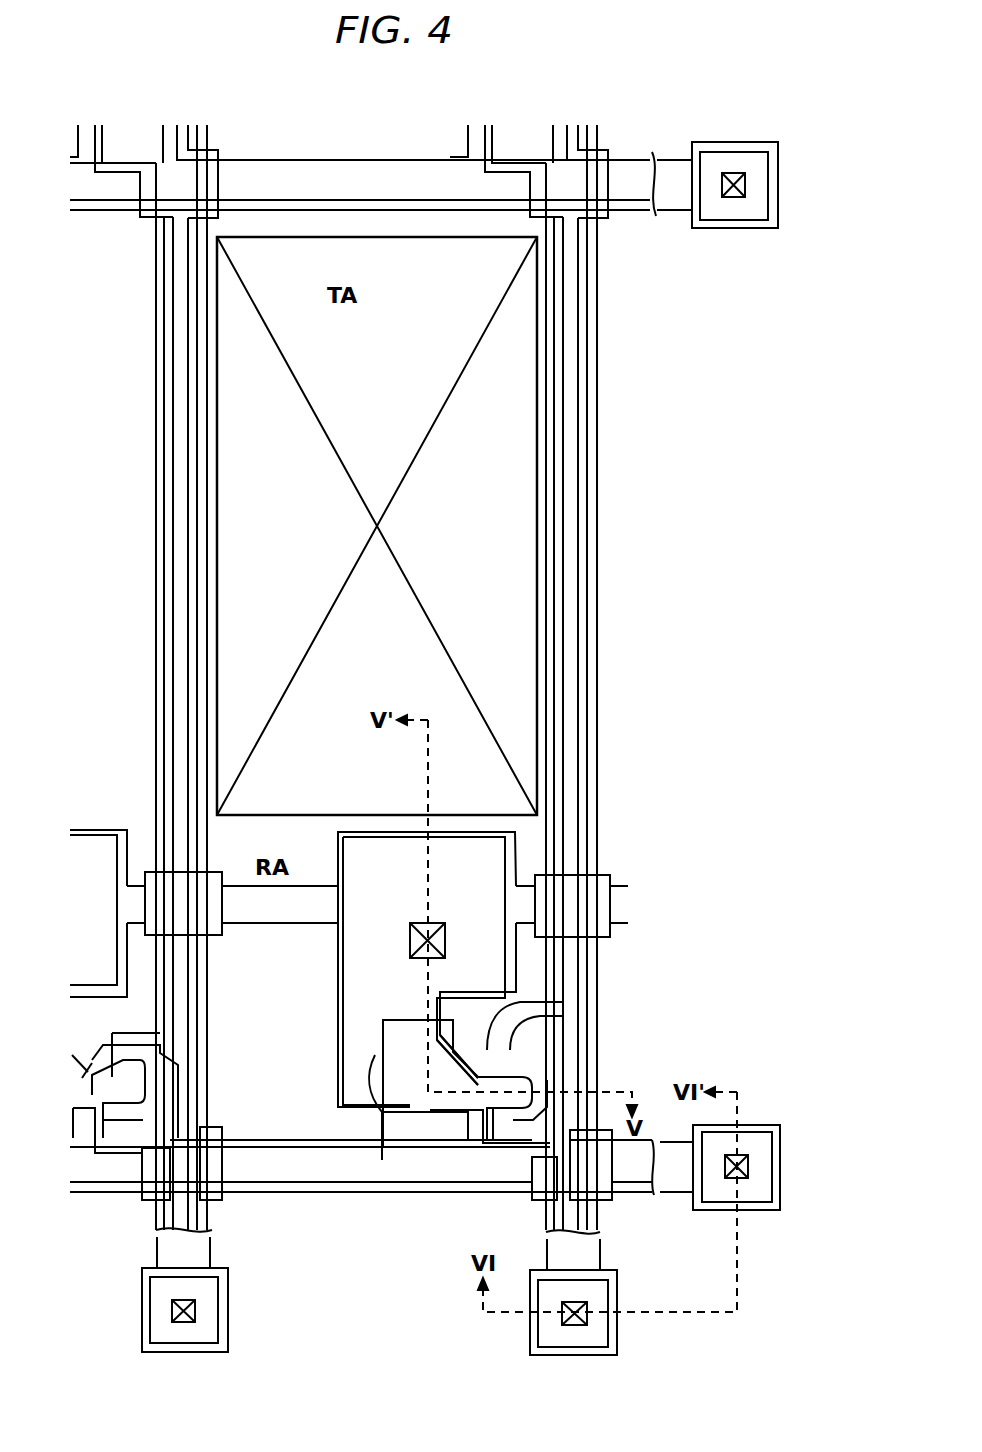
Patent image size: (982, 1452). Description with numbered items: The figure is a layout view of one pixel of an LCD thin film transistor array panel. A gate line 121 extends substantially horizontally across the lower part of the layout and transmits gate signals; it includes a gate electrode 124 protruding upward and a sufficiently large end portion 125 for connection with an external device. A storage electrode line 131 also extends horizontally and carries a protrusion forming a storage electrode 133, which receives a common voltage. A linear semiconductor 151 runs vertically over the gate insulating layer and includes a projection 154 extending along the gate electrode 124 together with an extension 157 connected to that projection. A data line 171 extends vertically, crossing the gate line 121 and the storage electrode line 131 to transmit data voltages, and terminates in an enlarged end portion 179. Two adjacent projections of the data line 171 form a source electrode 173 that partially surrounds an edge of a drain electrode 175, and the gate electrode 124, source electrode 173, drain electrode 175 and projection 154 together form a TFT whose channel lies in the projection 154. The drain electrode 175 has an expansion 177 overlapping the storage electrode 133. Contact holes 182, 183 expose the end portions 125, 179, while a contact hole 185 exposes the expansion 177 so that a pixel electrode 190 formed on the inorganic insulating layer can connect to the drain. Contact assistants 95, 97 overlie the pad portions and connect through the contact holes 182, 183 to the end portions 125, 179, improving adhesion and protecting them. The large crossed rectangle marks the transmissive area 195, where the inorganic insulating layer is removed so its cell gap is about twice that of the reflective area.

The contact assistant 95 is at (763, 1210).
The contact assistant 97 is at (617, 1293).
The gate line 121 is at (293, 1138).
The gate electrode 124 is at (470, 1022).
The end portion of gate line 125 is at (772, 1183).
The storage electrode line 131 is at (628, 886).
The storage electrode 133 is at (517, 852).
The linear semiconductor 151 is at (565, 517).
The projection 154 is at (540, 1060).
The extension 157 is at (375, 1060).
The data line 171 is at (548, 583).
The source electrode 173 is at (512, 1143).
The drain electrode 175 is at (485, 1150).
The expansion 177 is at (502, 832).
The end portion of data line 179 is at (610, 1332).
The contact hole 182 is at (748, 1157).
The contact hole 183 is at (562, 1315).
The contact hole 185 is at (445, 947).
The pixel electrode 190 is at (558, 457).
The transmissive area 195 is at (538, 392).